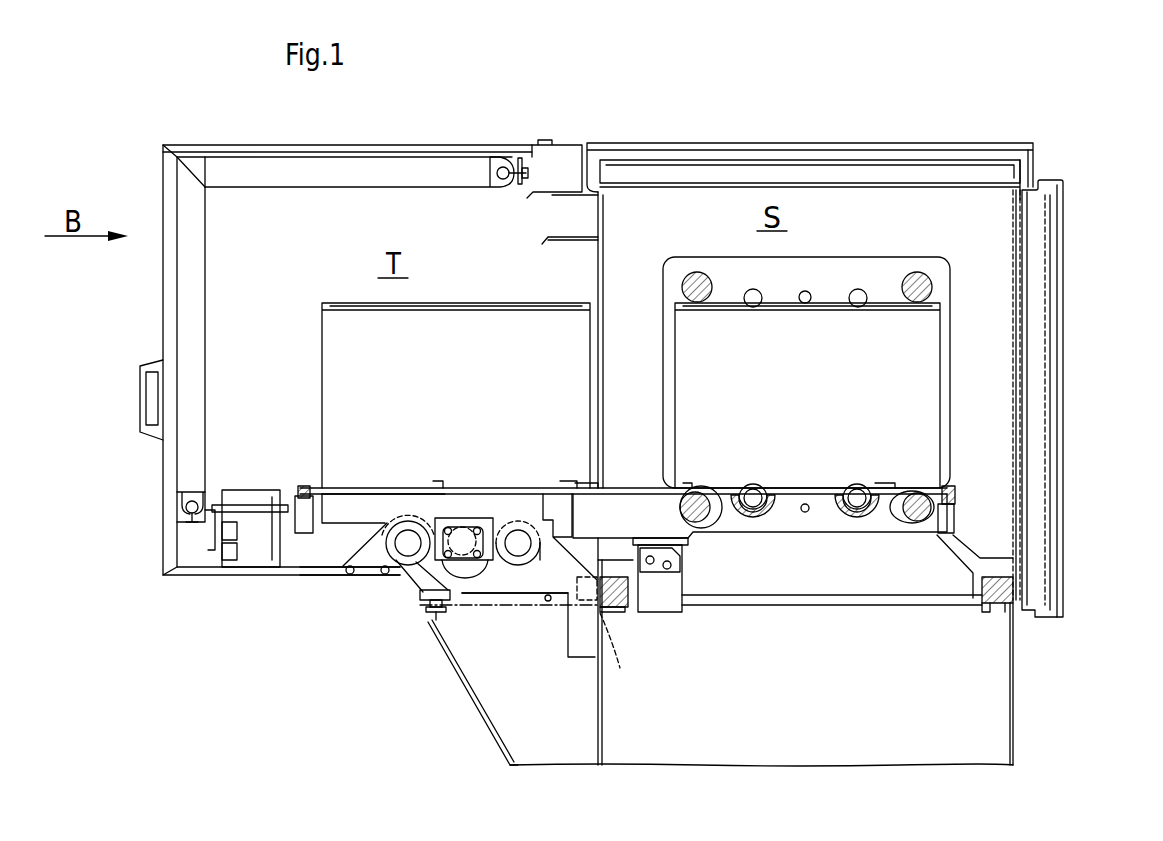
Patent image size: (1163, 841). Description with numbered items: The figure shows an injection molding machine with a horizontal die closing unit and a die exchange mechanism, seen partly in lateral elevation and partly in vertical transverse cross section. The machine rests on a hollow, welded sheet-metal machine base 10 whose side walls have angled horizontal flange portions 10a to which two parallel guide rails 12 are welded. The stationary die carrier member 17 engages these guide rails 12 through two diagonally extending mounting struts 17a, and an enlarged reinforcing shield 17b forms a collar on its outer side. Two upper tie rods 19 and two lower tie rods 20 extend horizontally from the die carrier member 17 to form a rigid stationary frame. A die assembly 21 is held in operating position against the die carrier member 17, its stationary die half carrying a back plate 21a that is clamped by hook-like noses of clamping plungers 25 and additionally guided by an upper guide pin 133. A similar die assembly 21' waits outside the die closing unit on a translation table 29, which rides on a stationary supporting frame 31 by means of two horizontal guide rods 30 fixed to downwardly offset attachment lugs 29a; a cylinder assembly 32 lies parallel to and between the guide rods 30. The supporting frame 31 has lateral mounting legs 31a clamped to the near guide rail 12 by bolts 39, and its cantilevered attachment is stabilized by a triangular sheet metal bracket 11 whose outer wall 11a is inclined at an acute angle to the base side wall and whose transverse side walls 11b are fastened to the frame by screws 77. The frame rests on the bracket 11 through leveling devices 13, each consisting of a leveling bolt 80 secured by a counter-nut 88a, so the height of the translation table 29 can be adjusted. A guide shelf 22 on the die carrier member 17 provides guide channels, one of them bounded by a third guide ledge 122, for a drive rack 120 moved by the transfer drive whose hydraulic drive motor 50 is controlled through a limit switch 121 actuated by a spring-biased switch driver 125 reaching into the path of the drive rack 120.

The machine base 10 is at (605, 742).
The angled horizontal flange portions 10a is at (618, 612).
The sheet metal bracket 11 is at (563, 750).
The outer wall 11a is at (490, 728).
The transverse side walls 11b is at (533, 604).
The guide rails 12 is at (992, 608).
The leveling devices 13 is at (412, 616).
The stationary die carrier member 17 is at (811, 250).
The mounting struts 17a is at (960, 553).
The reinforcing shield 17b is at (990, 335).
The upper tie rods 19 is at (700, 283).
The lower tie rods 20 is at (697, 490).
The die assembly 21 is at (807, 348).
The die assembly 21' is at (420, 395).
The back plate 21a is at (445, 303).
The guide shelf 22 is at (627, 480).
The clamping plungers 25 is at (863, 306).
The translation table 29 is at (437, 478).
The attachment lugs 29a is at (530, 562).
The guide rods 30 is at (406, 525).
The supporting frame 31 is at (482, 580).
The mounting legs 31a is at (632, 655).
The cylinder assembly 32 is at (471, 518).
The bolts 39 is at (580, 560).
The hydraulic drive motor 50 is at (660, 595).
The screws 77 is at (548, 594).
The leveling bolts 80 is at (430, 623).
The counter-nuts 88a is at (393, 522).
The drive rack 120 is at (860, 492).
The limit switch 121 is at (958, 519).
The third guide ledge 122 is at (462, 543).
The switch drivers 125 is at (953, 492).
The upper guide pin 133 is at (805, 304).